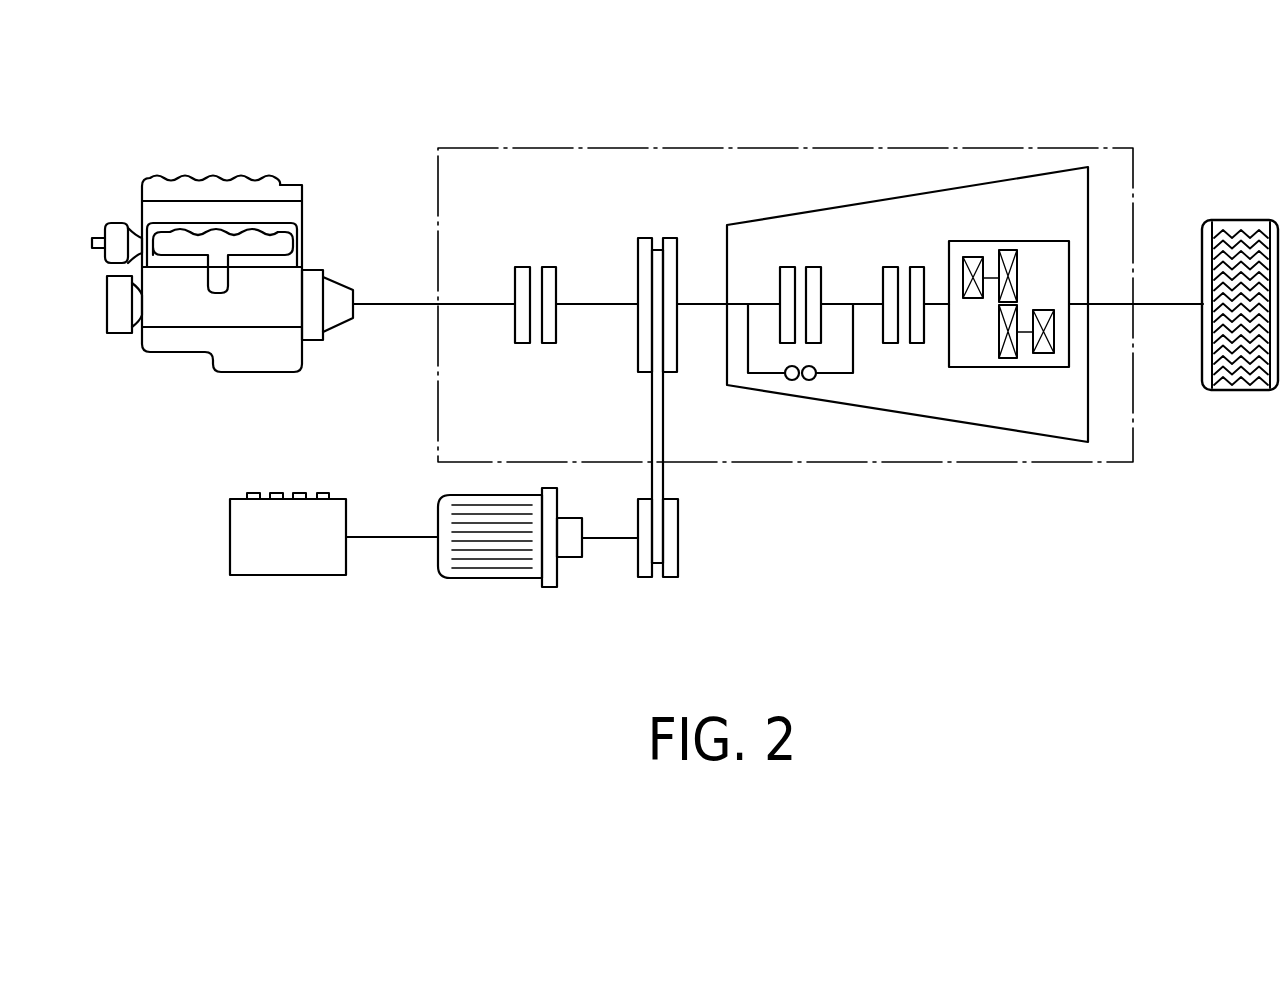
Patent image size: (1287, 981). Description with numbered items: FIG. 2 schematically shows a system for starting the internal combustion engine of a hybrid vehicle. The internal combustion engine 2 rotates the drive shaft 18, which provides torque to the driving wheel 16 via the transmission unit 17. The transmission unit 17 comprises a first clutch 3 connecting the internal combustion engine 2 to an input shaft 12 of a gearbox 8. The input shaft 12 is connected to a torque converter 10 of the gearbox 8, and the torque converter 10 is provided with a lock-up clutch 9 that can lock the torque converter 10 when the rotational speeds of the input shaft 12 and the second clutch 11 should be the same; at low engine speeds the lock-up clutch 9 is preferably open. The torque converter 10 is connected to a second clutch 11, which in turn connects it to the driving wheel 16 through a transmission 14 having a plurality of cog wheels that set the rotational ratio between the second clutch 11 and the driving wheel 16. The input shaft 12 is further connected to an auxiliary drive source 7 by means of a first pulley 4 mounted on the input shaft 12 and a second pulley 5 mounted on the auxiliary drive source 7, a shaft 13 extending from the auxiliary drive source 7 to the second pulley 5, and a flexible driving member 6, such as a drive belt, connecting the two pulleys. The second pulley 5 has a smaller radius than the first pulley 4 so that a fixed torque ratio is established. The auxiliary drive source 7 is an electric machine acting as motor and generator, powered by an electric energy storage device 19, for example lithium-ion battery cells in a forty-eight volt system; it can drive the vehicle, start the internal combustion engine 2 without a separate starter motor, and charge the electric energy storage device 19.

The internal combustion engine 2 is at (218, 178).
The first clutch 3 is at (513, 282).
The first pulley 4 is at (637, 282).
The second pulley 5 is at (678, 538).
The flexible driving member 6 is at (664, 432).
The auxiliary drive source 7 is at (496, 578).
The gearbox 8 is at (958, 186).
The lock-up clutch 9 is at (780, 285).
The torque converter 10 is at (810, 380).
The second clutch 11 is at (883, 285).
The input shaft 12 is at (717, 303).
The shaft 13 is at (618, 538).
The transmission 14 is at (1012, 367).
The driving wheel 16 is at (1237, 220).
The transmission unit 17 is at (1057, 148).
The drive shaft 18 is at (395, 302).
The electric energy storage device 19 is at (292, 575).